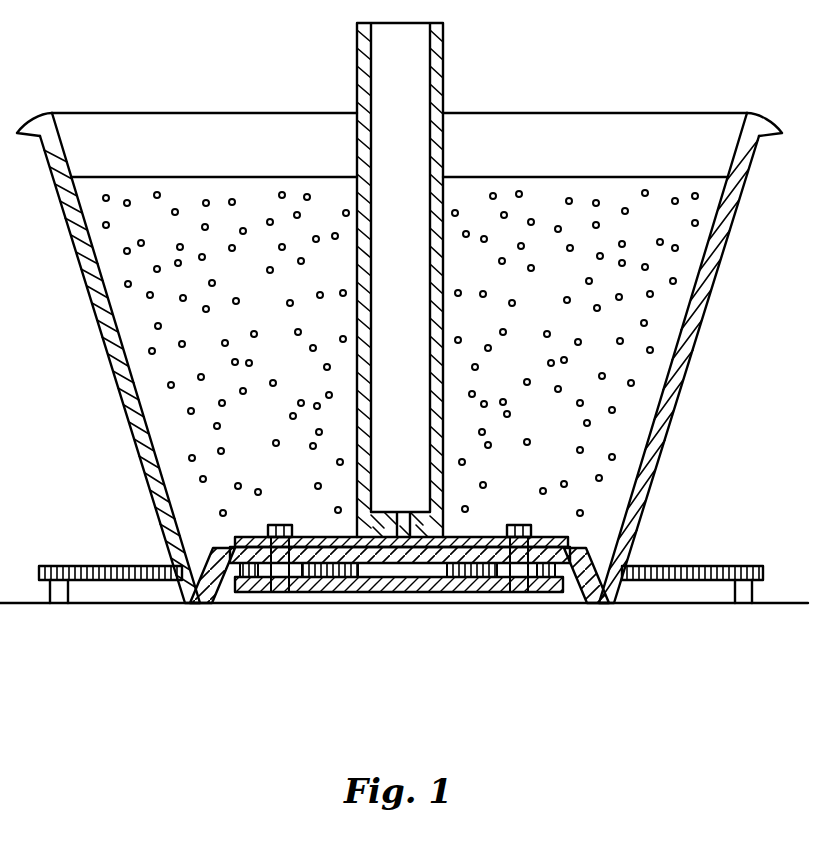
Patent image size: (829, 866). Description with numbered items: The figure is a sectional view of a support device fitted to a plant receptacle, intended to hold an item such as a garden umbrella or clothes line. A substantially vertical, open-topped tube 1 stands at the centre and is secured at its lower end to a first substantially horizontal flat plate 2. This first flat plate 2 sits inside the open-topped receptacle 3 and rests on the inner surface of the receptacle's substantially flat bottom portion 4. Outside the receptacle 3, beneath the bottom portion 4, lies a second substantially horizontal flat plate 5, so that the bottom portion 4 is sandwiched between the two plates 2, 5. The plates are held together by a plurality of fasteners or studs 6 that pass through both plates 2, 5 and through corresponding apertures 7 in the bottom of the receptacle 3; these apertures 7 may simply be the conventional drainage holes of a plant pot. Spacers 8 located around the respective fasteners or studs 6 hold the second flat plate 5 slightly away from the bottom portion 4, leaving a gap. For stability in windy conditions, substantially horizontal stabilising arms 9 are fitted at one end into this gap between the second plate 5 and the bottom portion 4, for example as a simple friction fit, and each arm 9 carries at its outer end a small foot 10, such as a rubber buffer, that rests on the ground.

The open-topped tube 1 is at (443, 65).
The first flat plate 2 is at (558, 535).
The receptacle 3 is at (700, 320).
The bottom portion 4 is at (573, 563).
The second flat plate 5 is at (543, 592).
The fasteners or studs 6 is at (281, 525).
The apertures 7 is at (256, 592).
The spacers 8 is at (308, 592).
The stabilising arms 9 is at (125, 582).
The foot 10 is at (47, 605).